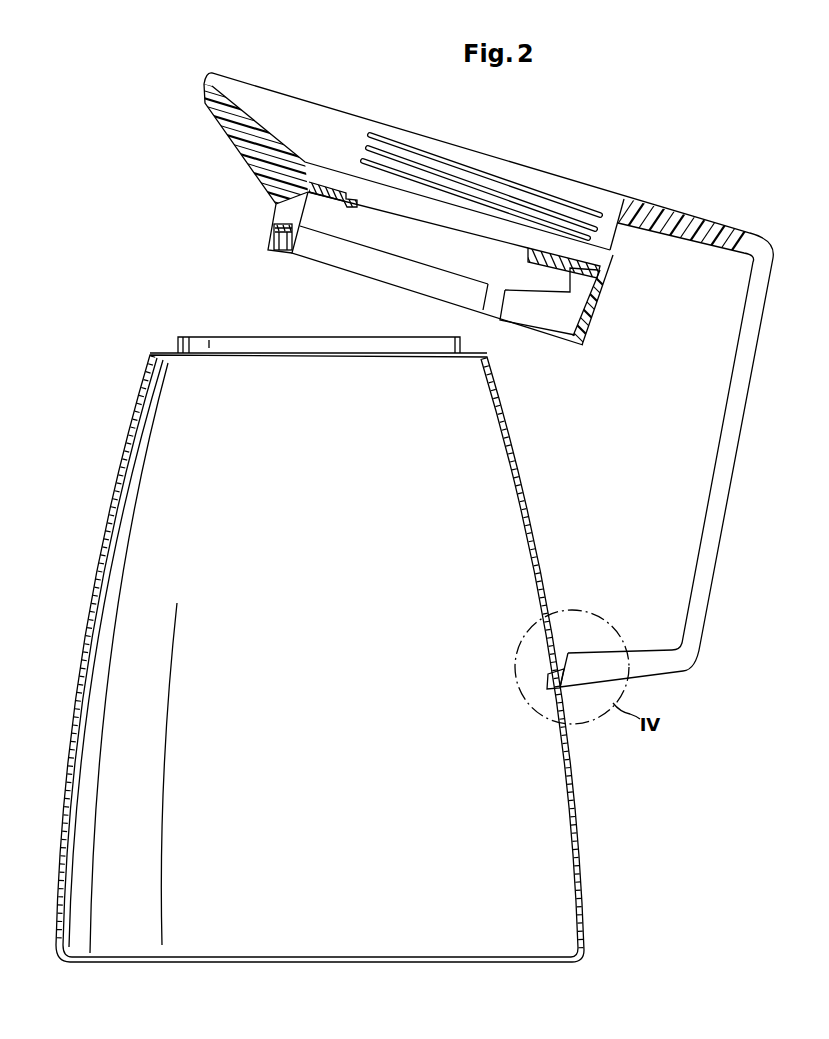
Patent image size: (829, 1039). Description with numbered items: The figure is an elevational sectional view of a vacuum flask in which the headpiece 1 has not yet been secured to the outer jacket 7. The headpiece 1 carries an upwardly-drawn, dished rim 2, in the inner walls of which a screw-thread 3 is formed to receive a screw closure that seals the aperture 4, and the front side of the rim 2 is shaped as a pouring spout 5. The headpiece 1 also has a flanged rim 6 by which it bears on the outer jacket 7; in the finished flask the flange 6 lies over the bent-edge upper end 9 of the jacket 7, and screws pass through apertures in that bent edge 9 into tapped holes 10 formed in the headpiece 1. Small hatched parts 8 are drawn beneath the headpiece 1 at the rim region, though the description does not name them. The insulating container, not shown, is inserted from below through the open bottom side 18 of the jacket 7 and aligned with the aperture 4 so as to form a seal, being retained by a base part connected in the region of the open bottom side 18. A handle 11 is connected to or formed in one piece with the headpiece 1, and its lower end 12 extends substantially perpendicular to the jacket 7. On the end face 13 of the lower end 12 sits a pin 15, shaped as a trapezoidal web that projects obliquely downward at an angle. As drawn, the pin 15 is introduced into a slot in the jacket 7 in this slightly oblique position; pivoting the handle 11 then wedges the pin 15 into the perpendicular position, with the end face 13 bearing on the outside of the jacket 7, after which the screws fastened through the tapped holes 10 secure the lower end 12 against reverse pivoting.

The headpiece 1 is at (596, 181).
The dished rim 2 is at (350, 121).
The screw-thread 3 is at (493, 180).
The aperture 4 is at (433, 223).
The pouring spout 5 is at (240, 132).
The flanged rim 6 is at (587, 323).
The outer jacket 7 is at (517, 470).
The sealing ring 8 is at (327, 200).
The bent-edge upper end 9 is at (460, 358).
The tapped holes 10 is at (272, 237).
The handle 11 is at (720, 440).
The lower end 12 is at (582, 680).
The end face 13 is at (568, 653).
The pin 15 is at (550, 690).
The open bottom side 18 is at (418, 963).